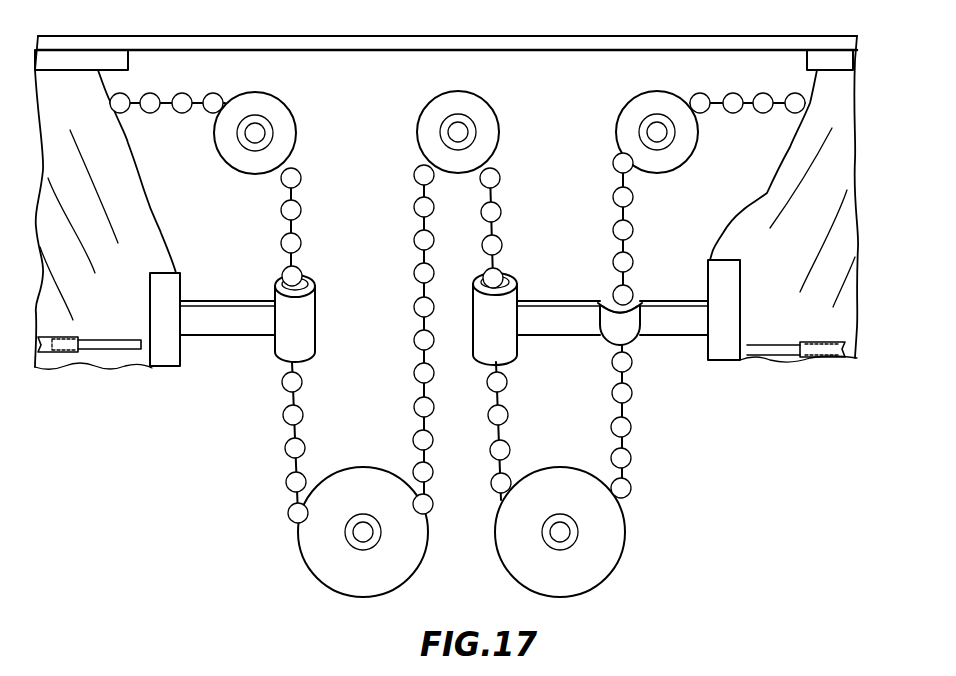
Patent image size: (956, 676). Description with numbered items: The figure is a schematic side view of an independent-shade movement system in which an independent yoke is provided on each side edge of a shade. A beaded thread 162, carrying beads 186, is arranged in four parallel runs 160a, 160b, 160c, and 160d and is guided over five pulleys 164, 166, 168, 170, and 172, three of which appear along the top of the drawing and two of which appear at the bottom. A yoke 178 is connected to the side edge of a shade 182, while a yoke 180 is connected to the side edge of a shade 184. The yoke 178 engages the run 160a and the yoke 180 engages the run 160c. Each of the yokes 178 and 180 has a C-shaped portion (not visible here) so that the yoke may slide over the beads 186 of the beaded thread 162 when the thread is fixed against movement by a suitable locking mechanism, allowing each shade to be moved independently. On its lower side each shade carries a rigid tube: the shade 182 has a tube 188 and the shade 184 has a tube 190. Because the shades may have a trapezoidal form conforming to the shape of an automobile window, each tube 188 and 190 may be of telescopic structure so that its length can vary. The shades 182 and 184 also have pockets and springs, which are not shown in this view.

The run of beaded thread 160a is at (314, 417).
The run of beaded thread 160b is at (402, 339).
The run of beaded thread 160c is at (525, 442).
The run of beaded thread 160d is at (650, 382).
The beaded thread 162 is at (457, 308).
The pulley 164 is at (247, 167).
The pulley 166 is at (315, 553).
The pulley 168 is at (490, 132).
The pulley 170 is at (605, 557).
The pulley 172 is at (675, 160).
The yoke 178 is at (280, 345).
The yoke 180 is at (507, 345).
The shade 182 is at (55, 323).
The shade 184 is at (780, 310).
The beads 186 is at (296, 212).
The tube 188 is at (65, 353).
The tube 190 is at (817, 350).